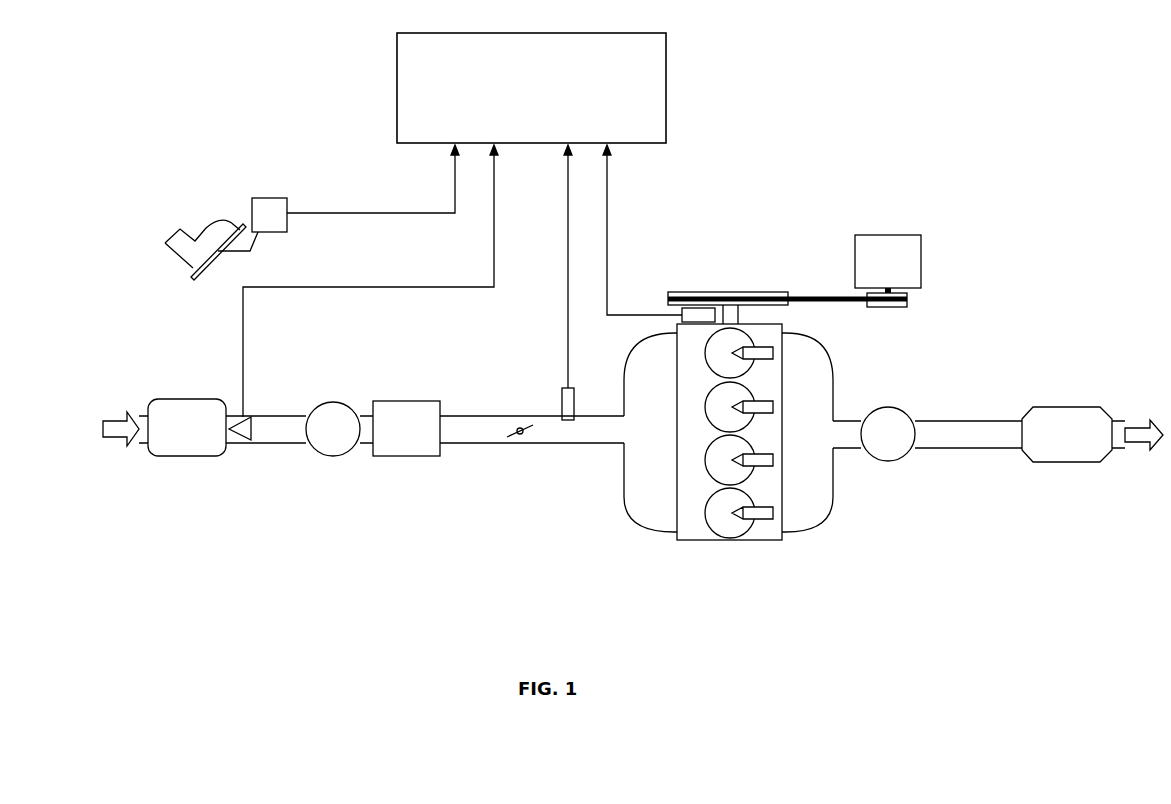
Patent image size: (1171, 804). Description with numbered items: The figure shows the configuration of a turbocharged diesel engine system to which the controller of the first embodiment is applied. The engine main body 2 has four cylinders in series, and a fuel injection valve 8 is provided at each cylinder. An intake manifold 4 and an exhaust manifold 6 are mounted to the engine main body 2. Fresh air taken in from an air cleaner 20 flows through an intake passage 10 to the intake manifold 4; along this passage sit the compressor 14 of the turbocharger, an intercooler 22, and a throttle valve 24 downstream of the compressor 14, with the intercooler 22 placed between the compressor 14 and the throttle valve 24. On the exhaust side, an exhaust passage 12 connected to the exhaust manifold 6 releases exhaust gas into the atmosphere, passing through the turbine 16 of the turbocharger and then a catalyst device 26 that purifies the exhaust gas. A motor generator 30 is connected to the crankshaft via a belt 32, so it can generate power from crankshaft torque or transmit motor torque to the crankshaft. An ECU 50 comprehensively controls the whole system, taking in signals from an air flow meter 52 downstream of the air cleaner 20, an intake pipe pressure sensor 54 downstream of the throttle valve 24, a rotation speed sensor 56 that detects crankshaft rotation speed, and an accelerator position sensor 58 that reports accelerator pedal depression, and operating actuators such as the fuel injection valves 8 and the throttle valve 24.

The engine main body 2 is at (1036, 298).
The intake manifold 4 is at (637, 520).
The exhaust manifold 6 is at (810, 528).
The fuel injection valve 8 is at (762, 528).
The intake passage 10 is at (282, 445).
The exhaust passage 12 is at (1007, 453).
The compressor 14 is at (330, 400).
The turbine 16 is at (906, 455).
The air cleaner 20 is at (187, 397).
The intercooler 22 is at (408, 458).
The throttle valve 24 is at (533, 422).
The catalyst device 26 is at (1063, 407).
The motor generator 30 is at (886, 235).
The belt 32 is at (797, 292).
The ECU 50 is at (397, 78).
The air flow meter 52 is at (270, 412).
The intake pipe pressure sensor 54 is at (576, 388).
The rotation speed sensor 56 is at (680, 312).
The accelerator position sensor 58 is at (268, 198).